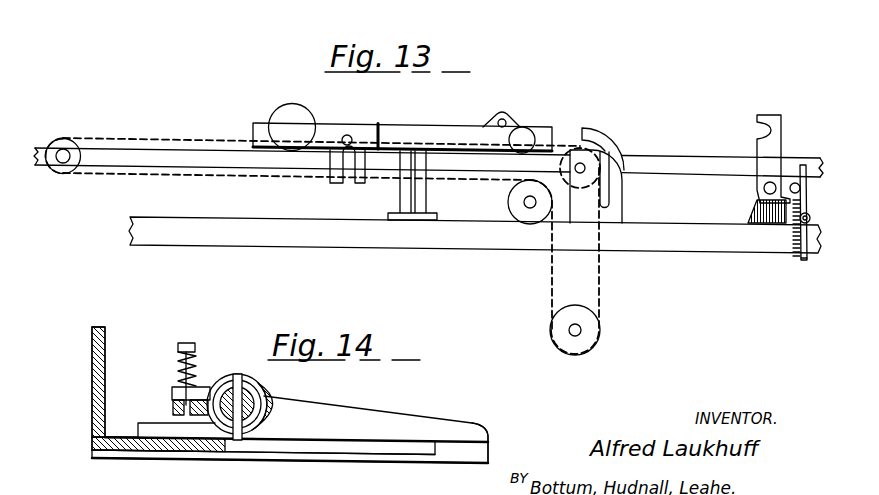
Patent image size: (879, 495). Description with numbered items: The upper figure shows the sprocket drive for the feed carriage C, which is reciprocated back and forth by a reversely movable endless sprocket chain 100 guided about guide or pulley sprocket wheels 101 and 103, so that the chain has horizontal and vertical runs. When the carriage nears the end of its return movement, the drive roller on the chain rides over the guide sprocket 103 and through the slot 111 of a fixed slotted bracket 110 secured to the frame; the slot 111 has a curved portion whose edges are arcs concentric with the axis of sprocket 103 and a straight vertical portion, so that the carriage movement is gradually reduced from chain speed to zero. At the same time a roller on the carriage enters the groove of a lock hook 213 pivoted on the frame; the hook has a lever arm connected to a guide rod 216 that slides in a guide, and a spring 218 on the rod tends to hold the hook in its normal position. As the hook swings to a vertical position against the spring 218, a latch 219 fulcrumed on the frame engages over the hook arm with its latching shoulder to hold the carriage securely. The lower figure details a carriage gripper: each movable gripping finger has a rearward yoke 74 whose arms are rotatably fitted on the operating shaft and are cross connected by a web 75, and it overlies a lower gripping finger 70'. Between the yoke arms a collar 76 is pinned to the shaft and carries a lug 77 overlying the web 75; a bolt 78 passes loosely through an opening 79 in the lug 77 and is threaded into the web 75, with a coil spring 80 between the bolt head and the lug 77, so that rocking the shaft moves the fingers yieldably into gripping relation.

In FIG. 13, the endless sprocket chain 100 is at (120, 138).
In FIG. 13, the carriage C is at (424, 123).
In FIG. 13, the guide sprocket wheel 101 is at (518, 212).
In FIG. 13, the guide sprocket wheel 103 is at (562, 165).
In FIG. 13, the fixed slotted bracket 110 is at (615, 214).
In FIG. 13, the slot 111 is at (618, 154).
In FIG. 13, the lock hook 213 is at (782, 132).
In FIG. 13, the latch 219 is at (818, 156).
In FIG. 13, the spring 218 is at (788, 230).
In FIG. 13, the guide rod 216 is at (800, 259).
In FIG. 14, the lower gripping fingers 70' is at (263, 472).
In FIG. 14, the bolt 78 is at (187, 342).
In FIG. 14, the coil spring 80 is at (178, 364).
In FIG. 14, the lug 77 is at (172, 394).
In FIG. 14, the web 75 is at (258, 381).
In FIG. 14, the collar 76 is at (222, 392).
In FIG. 14, the opening 79 is at (240, 441).
In FIG. 14, the yoke 74 is at (298, 421).